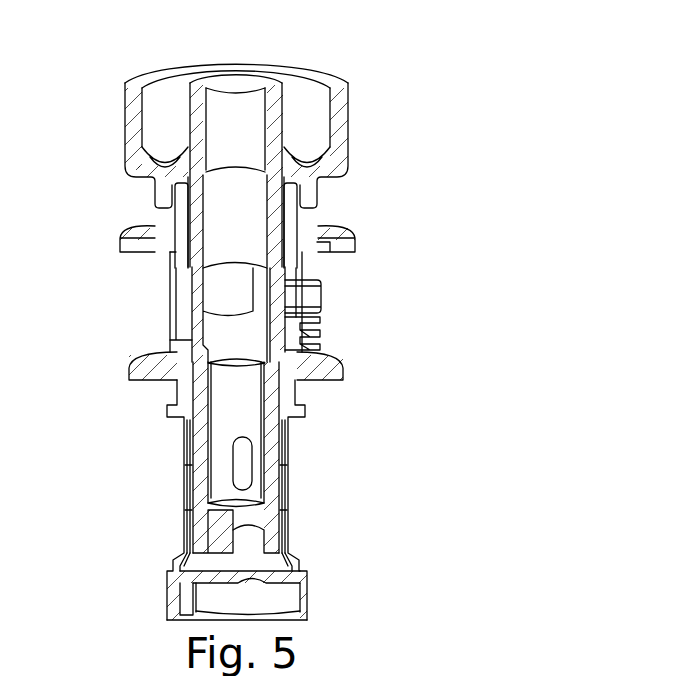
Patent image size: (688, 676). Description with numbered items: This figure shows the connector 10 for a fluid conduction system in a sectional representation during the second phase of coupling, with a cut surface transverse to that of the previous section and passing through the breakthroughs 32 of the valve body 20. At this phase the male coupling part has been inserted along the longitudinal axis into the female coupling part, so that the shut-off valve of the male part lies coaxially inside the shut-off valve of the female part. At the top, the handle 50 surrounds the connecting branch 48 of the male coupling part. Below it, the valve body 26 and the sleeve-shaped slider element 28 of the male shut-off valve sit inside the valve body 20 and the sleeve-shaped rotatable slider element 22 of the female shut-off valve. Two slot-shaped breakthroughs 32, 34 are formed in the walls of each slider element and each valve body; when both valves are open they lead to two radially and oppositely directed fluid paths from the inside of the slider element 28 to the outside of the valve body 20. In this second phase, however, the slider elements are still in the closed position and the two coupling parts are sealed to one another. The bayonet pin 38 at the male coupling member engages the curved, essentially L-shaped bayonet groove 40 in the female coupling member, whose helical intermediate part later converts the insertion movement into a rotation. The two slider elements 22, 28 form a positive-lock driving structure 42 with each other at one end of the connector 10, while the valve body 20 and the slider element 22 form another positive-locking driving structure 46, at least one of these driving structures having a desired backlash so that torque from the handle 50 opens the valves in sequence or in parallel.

The connector 10 is at (395, 131).
The valve body 20 is at (173, 433).
The rotatable slider element 22 is at (183, 540).
The valve body 26 is at (172, 338).
The slider element 28 is at (187, 283).
The slot-shaped breakthrough 32 is at (181, 481).
The slot-shaped breakthrough 34 is at (238, 422).
The bayonet pin 38 is at (305, 298).
The curved bayonet groove 40 is at (332, 328).
The positive-lock driving structure 42 is at (290, 534).
The positive-locking driving structure 46 is at (182, 600).
The connecting branch 48 is at (210, 82).
The handle 50 is at (315, 82).